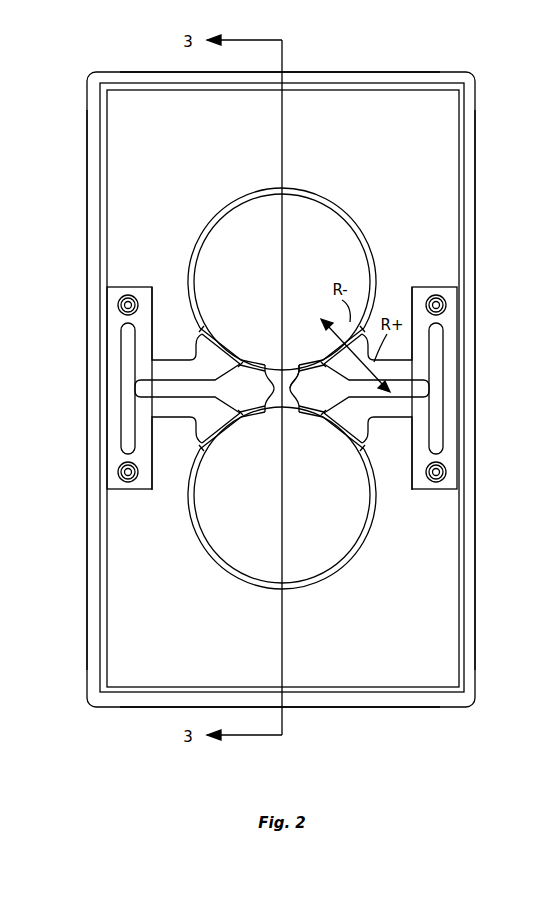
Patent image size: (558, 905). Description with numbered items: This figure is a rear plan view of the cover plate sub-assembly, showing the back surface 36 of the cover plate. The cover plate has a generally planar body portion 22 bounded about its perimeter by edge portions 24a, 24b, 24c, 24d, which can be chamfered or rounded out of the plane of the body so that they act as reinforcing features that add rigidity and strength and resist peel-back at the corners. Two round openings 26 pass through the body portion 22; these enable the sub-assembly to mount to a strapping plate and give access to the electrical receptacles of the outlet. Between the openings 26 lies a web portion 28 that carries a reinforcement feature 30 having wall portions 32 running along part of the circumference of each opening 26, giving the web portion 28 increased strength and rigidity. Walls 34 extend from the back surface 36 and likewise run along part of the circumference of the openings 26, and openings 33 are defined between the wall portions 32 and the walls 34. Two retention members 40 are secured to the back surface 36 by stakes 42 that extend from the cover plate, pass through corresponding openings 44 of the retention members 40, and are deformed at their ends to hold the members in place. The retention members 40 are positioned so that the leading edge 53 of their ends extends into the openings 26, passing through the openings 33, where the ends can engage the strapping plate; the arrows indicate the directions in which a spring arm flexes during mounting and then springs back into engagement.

The body portion 22 is at (436, 145).
The edge portion 24a is at (318, 72).
The edge portion 24b is at (86, 620).
The edge portion 24c is at (135, 708).
The edge portion 24d is at (476, 552).
The openings 26 is at (327, 228).
The web portion 28 is at (293, 370).
The reinforcement feature 30 is at (289, 398).
The wall portions 32 is at (259, 367).
The openings 33 is at (204, 330).
The walls 34 is at (299, 190).
The back surface 36 is at (149, 163).
The retention members 40 is at (167, 484).
The stakes 42 is at (112, 302).
The openings 44 is at (121, 311).
The leading edge 53 is at (218, 334).